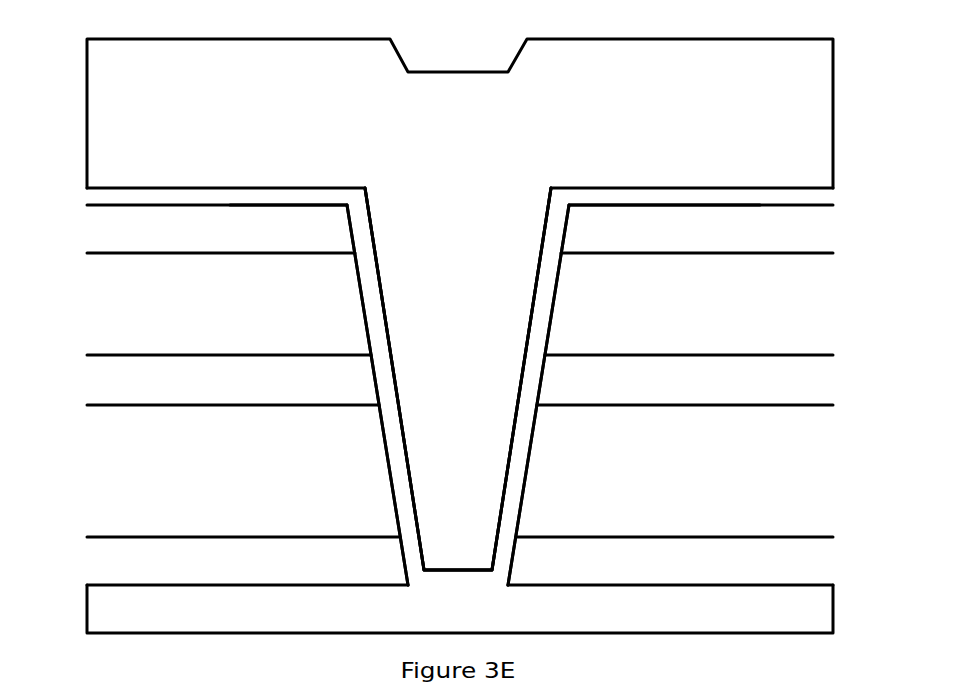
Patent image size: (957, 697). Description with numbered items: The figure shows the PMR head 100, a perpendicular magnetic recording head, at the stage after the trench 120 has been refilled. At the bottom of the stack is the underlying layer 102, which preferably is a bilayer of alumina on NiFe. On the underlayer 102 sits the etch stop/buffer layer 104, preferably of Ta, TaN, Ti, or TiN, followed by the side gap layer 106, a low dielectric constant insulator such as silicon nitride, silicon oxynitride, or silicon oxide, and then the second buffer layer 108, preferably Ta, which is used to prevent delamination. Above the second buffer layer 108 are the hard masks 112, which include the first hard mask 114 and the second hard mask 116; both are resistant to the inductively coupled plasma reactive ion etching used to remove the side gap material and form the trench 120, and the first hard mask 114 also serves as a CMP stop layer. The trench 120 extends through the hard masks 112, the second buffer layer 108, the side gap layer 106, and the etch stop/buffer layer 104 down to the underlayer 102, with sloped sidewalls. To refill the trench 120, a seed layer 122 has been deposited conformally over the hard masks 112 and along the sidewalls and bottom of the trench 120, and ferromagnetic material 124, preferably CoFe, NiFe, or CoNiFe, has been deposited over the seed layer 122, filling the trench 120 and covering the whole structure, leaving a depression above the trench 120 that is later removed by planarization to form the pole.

The PMR head 100 is at (438, 36).
The underlying layer 102 is at (87, 634).
The etch stop/buffer layer 104 is at (86, 568).
The side gap layer 106 is at (87, 500).
The second buffer layer 108 is at (87, 372).
The hard masks 112 is at (70, 205).
The first hard mask 114 is at (365, 305).
The second hard mask 116 is at (255, 205).
The trench 120 is at (448, 187).
The seed layer 122 is at (87, 197).
The ferromagnetic material 124 is at (87, 90).